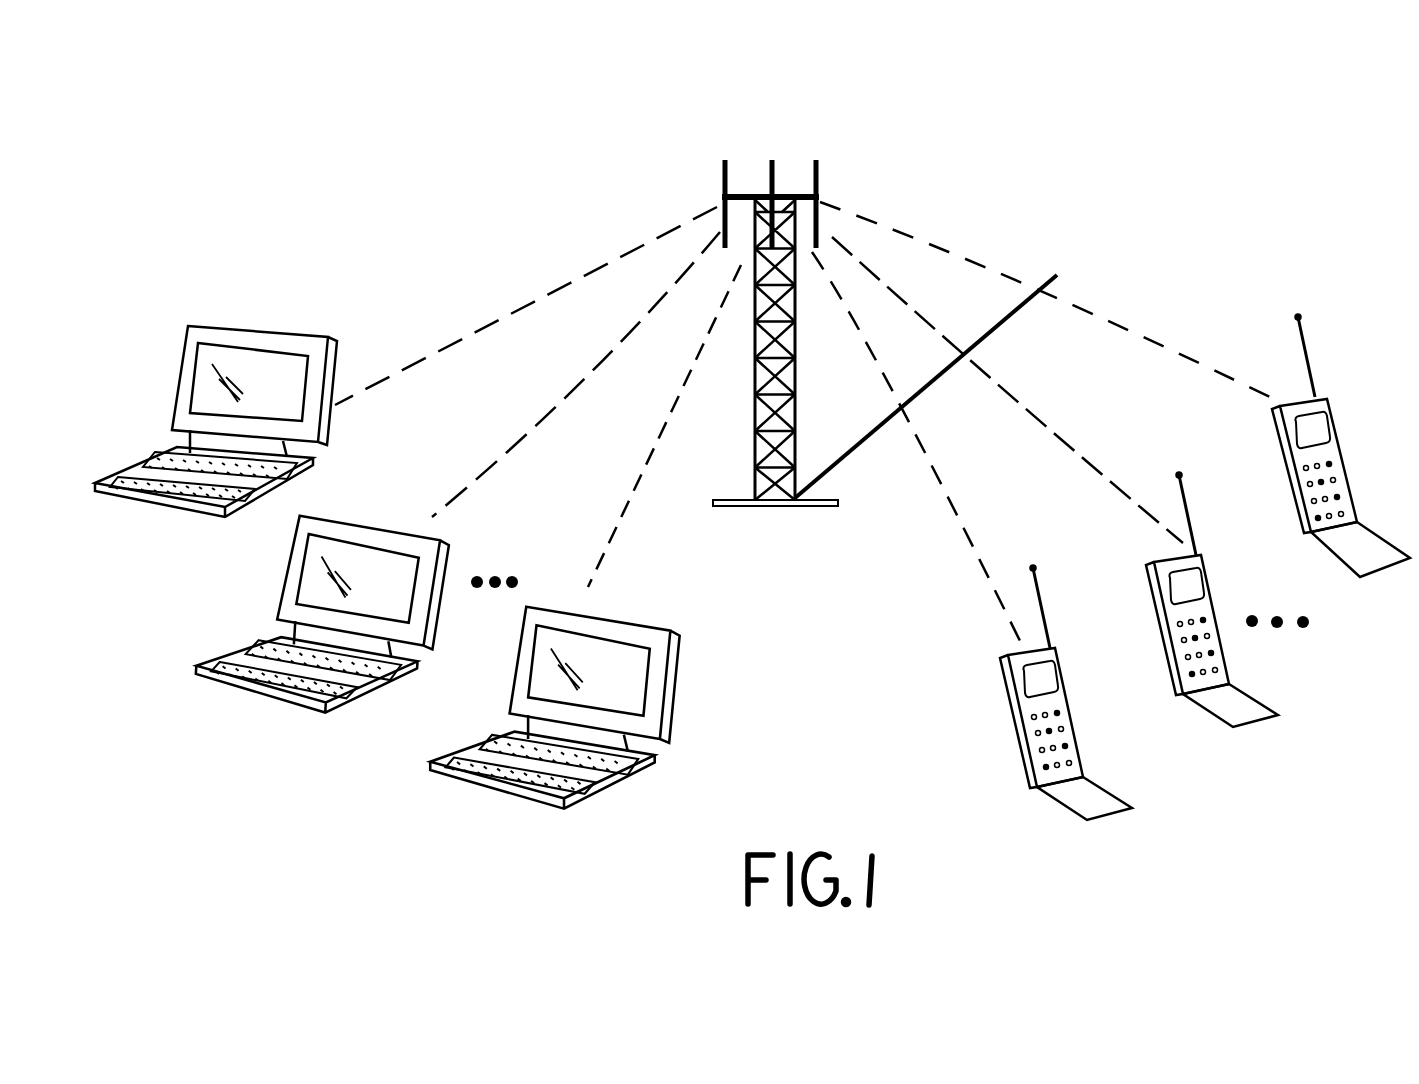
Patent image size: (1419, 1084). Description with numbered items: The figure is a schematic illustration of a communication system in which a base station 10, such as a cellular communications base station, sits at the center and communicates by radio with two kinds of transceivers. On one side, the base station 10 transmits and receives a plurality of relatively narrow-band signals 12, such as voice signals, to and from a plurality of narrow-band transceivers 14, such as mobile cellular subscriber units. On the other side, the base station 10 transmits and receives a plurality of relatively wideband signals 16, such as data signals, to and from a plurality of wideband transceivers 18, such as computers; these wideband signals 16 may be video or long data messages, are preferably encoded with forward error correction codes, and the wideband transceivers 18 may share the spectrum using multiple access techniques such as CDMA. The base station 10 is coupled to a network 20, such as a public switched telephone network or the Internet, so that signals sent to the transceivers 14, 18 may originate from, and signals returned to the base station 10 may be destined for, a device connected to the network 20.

The base station 10 is at (774, 164).
The narrow-band signals 12 is at (960, 528).
The narrow-band transceivers 14 is at (1337, 425).
The wideband signals 16 is at (617, 513).
The wideband transceivers 18 is at (557, 610).
The network 20 is at (1042, 280).